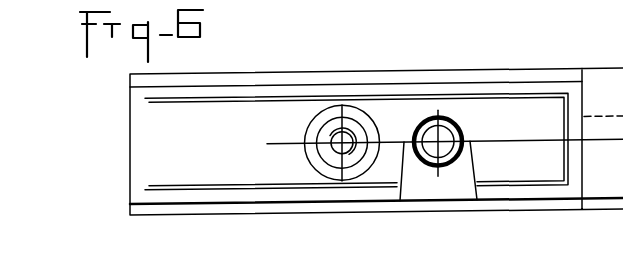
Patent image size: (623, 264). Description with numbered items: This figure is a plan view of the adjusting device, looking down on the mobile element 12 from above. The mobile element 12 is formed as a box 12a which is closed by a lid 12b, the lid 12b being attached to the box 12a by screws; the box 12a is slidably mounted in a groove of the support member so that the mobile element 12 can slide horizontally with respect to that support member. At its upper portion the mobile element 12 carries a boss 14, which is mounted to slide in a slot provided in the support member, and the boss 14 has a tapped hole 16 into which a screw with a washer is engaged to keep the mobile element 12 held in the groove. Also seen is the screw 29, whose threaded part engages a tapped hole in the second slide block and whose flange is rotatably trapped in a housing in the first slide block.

The mobile element 12 is at (553, 70).
The box 12a is at (275, 84).
The lid 12b is at (436, 205).
The boss 14 is at (347, 131).
The tapped hole 16 is at (355, 144).
The screw 29 is at (444, 137).